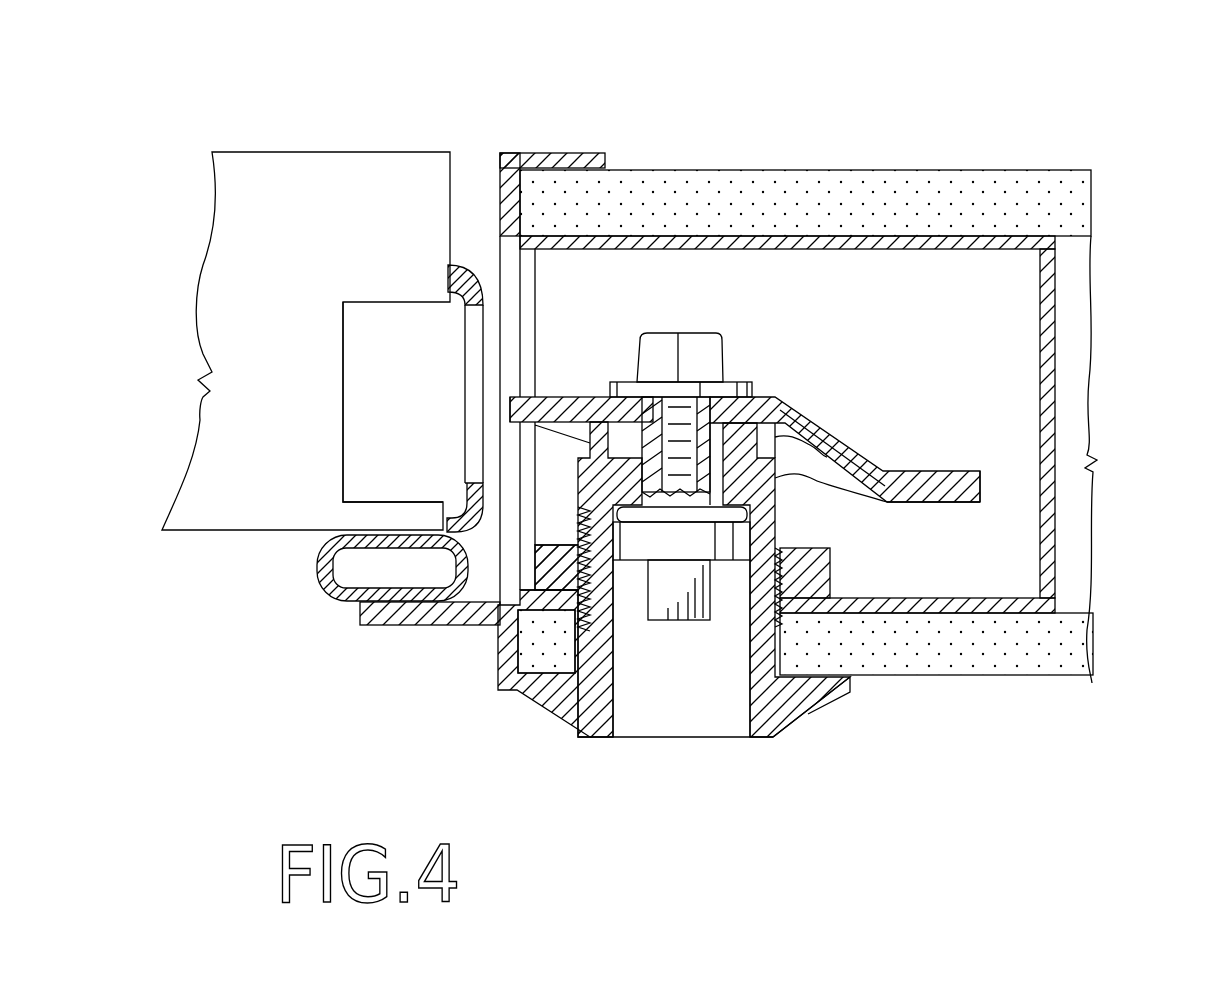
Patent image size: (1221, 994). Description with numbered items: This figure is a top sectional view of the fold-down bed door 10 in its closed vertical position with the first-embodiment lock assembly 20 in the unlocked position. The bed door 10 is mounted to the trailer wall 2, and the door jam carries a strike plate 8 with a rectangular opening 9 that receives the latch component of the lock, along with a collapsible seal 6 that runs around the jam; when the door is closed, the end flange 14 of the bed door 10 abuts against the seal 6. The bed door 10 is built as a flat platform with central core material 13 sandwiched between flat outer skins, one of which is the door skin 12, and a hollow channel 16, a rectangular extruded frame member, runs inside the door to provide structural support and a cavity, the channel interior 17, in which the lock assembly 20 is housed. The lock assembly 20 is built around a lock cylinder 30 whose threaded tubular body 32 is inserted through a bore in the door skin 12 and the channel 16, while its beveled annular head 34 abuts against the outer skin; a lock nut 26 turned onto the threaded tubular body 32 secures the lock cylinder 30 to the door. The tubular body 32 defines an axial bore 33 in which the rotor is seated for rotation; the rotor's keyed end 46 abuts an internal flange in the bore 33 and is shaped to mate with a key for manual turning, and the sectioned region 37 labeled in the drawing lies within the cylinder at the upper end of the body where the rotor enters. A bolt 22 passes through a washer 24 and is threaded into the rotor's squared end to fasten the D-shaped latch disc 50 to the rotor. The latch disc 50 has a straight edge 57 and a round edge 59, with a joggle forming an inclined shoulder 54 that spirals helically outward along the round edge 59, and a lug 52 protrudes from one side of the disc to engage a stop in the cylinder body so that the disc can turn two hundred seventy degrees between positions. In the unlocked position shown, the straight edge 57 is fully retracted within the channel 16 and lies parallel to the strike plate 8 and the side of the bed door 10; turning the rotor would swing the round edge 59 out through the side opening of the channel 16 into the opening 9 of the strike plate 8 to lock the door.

The trailer wall 2 is at (213, 532).
The collapsible seal 6 is at (330, 603).
The strike plate 8 is at (460, 265).
The rectangular opening 9 is at (470, 385).
The bed door 10 is at (959, 160).
The outer skin 12 is at (1005, 655).
The central core material 13 is at (839, 188).
The end flange 14 is at (433, 625).
The hollow channel 16 is at (995, 605).
The channel interior 17 is at (898, 303).
The lock assembly 20 is at (925, 368).
The bolt 22 is at (652, 355).
The washer 24 is at (750, 382).
The lock nut 26 is at (823, 565).
The lock cylinder 30 is at (556, 745).
The threaded tubular body 32 is at (760, 521).
The axial bore 33 is at (720, 713).
The beveled annular head 34 is at (795, 708).
The counterbore 37 is at (620, 430).
The keyed end 46 is at (673, 612).
The latch disc 50 is at (838, 408).
The lug 52 is at (827, 460).
The inclined shoulder 54 is at (937, 503).
The straight edge 57 is at (512, 408).
The round edge 59 is at (990, 485).